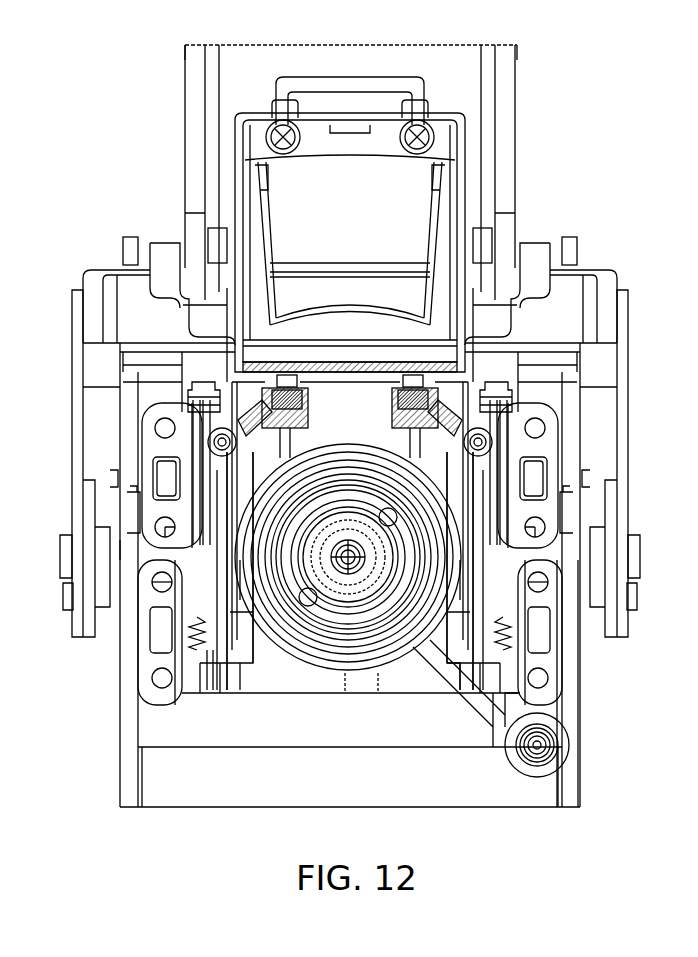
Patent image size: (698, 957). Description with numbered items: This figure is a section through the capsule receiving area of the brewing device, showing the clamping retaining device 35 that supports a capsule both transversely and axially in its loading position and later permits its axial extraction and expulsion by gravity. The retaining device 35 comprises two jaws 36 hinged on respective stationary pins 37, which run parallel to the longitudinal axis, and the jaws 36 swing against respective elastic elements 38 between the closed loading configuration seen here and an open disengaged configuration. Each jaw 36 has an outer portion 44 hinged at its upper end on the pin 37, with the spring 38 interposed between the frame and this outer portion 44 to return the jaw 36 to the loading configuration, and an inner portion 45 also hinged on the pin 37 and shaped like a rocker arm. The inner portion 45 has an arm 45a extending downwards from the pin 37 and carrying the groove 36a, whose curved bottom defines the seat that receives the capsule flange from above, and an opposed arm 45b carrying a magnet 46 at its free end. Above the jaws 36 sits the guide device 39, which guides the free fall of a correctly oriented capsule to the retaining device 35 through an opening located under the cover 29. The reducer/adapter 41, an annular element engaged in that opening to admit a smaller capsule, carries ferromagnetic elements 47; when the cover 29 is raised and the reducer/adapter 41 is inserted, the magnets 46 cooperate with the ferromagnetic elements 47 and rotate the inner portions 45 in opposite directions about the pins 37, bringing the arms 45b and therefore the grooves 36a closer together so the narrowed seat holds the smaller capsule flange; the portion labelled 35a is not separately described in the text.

The cover 29 is at (517, 72).
The clamping retaining device 35 is at (200, 509).
The side plate portion 35a is at (60, 554).
The jaws 36 is at (208, 598).
The grooves 36a is at (243, 585).
The stationary pins 37 is at (162, 410).
The elastic elements 38 is at (180, 650).
The guide device 39 is at (448, 304).
The reducer/adapter 41 is at (458, 210).
The outer portion 44 is at (217, 650).
The inner portion 45 is at (450, 400).
The arm 45a is at (200, 478).
The arm 45b is at (394, 420).
The magnet 46 is at (414, 386).
The ferromagnetic elements 47 is at (266, 140).